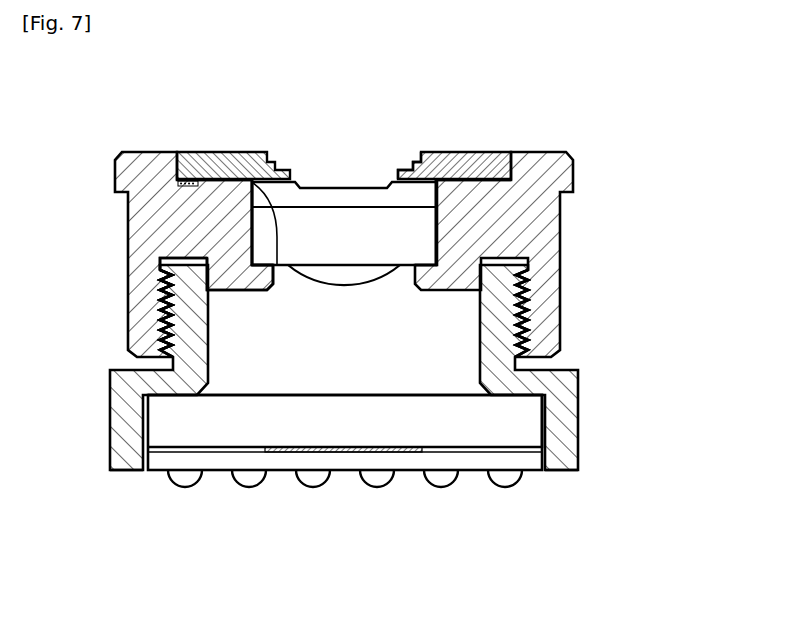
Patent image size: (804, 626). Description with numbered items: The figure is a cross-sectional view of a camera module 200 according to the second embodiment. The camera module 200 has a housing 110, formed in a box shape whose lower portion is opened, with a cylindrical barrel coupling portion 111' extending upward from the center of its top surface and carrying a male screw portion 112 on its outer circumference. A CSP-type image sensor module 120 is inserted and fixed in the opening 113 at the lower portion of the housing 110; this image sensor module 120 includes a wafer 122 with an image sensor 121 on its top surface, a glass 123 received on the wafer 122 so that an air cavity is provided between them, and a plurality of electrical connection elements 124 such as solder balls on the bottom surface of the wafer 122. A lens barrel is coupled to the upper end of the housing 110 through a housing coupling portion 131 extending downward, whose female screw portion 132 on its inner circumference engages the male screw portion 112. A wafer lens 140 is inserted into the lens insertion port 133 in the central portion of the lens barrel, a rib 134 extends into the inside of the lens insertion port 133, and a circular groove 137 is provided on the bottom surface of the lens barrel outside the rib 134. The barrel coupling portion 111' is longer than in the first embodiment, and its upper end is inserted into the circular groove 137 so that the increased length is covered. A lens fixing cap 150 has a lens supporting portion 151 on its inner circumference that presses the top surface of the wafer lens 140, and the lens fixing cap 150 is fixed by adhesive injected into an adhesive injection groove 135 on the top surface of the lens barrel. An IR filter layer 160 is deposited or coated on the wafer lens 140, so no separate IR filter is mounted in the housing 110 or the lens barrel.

The camera module 200 is at (628, 172).
The housing 110 is at (578, 423).
The barrel coupling portion 111' is at (105, 310).
The male screw portion 112 is at (157, 343).
The opening 113 is at (573, 473).
The image sensor module 120 is at (345, 506).
The image sensor 121 is at (345, 453).
The wafer 122 is at (282, 452).
The glass 123 is at (412, 422).
The electrical connection elements 124 is at (185, 486).
The housing coupling portion 131 is at (553, 287).
The female screw portion 132 is at (530, 322).
The lens insertion port 133 is at (448, 218).
The rib 134 is at (223, 278).
The adhesive injection groove 135 is at (181, 160).
The circular groove 137 is at (177, 255).
The wafer lens 140 is at (417, 250).
The lens fixing cap 150 is at (463, 152).
The lens supporting portion 151 is at (410, 164).
The IR filter layer 160 is at (227, 152).